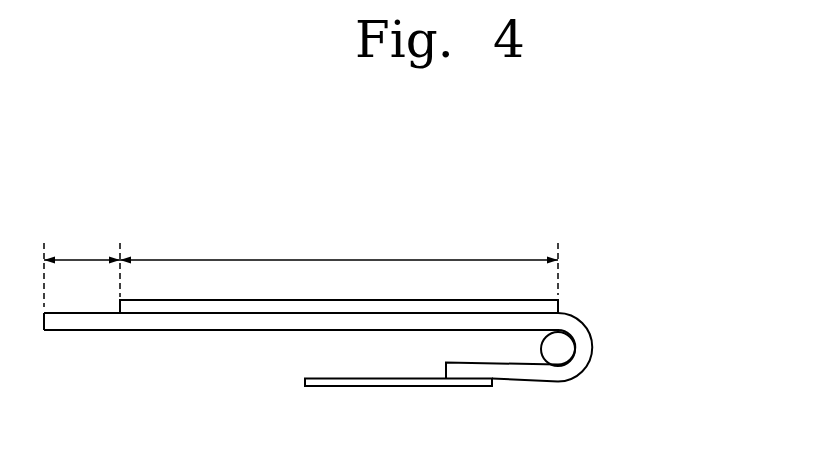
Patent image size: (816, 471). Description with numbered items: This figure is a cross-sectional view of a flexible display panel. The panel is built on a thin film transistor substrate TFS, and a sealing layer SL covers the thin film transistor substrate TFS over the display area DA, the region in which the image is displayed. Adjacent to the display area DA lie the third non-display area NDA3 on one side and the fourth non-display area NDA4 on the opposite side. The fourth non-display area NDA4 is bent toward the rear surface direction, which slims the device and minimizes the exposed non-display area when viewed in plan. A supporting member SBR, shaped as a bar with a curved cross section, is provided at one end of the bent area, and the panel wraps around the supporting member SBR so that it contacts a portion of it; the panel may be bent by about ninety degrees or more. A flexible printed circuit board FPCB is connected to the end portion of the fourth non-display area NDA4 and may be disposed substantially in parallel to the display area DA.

The thin film transistor substrate TFS is at (82, 322).
The sealing layer SL is at (237, 308).
The flexible printed circuit board FPCB is at (398, 386).
The supporting member SBR is at (558, 354).
The third non-display area NDA3 is at (82, 266).
The fourth non-display area NDA4 is at (608, 344).
The display area DA is at (339, 261).